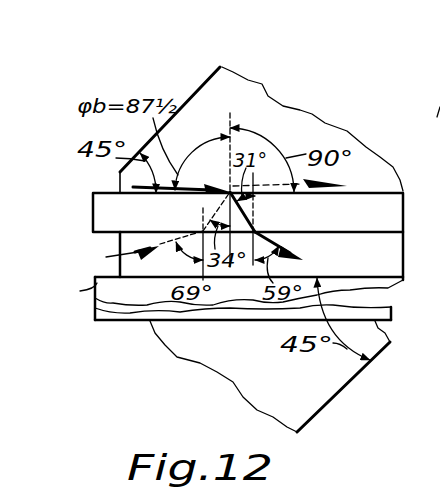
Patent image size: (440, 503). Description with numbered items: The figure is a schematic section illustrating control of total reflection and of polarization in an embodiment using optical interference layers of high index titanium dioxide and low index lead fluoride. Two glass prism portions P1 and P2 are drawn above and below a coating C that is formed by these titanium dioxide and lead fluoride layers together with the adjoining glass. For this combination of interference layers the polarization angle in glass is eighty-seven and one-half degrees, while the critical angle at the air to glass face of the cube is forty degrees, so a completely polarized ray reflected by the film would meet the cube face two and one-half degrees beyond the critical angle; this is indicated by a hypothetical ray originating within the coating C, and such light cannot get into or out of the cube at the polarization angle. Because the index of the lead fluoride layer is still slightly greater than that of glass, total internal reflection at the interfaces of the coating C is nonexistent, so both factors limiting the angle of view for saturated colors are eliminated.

The first prism P1 is at (249, 95).
The second prism P2 is at (237, 380).
The multilayer coating (TiO2 / PbF2 / Ch layers) C is at (45, 179).